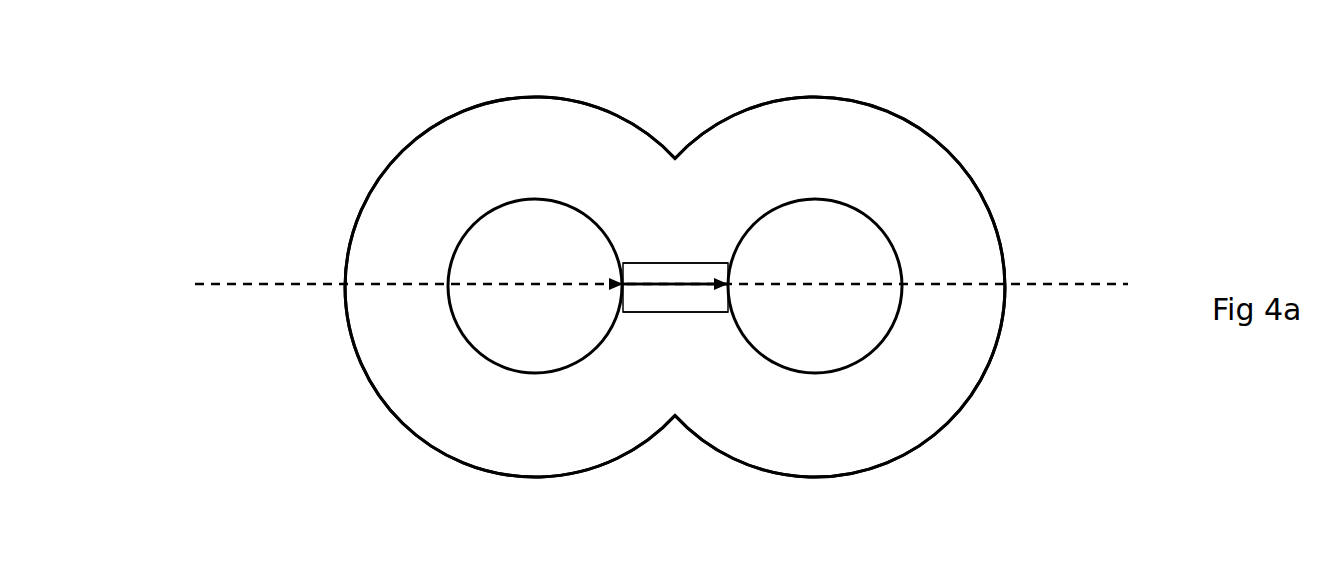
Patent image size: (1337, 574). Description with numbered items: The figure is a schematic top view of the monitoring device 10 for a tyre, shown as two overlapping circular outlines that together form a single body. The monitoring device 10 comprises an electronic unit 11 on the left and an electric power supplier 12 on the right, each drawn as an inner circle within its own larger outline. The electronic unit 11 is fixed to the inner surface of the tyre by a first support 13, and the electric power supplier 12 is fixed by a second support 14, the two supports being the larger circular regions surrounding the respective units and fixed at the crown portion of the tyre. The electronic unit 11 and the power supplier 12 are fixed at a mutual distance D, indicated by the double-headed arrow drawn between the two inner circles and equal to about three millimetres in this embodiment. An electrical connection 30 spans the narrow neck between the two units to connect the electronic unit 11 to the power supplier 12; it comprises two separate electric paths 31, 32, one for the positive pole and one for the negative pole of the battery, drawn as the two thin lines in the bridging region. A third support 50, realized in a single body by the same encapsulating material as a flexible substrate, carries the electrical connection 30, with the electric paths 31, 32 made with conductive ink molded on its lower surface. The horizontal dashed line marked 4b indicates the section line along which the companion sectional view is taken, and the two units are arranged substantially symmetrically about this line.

The monitoring device 10 is at (248, 147).
The electronic unit 11 is at (433, 325).
The electric power supplier 12 is at (917, 348).
The first support 13 is at (534, 165).
The second support 14 is at (842, 165).
The electrical connection 30 is at (643, 247).
The electric path 31 is at (665, 263).
The electric path 32 is at (690, 312).
The third support 50 is at (677, 200).
The distance D is at (675, 284).
The section line 4b is at (272, 282).